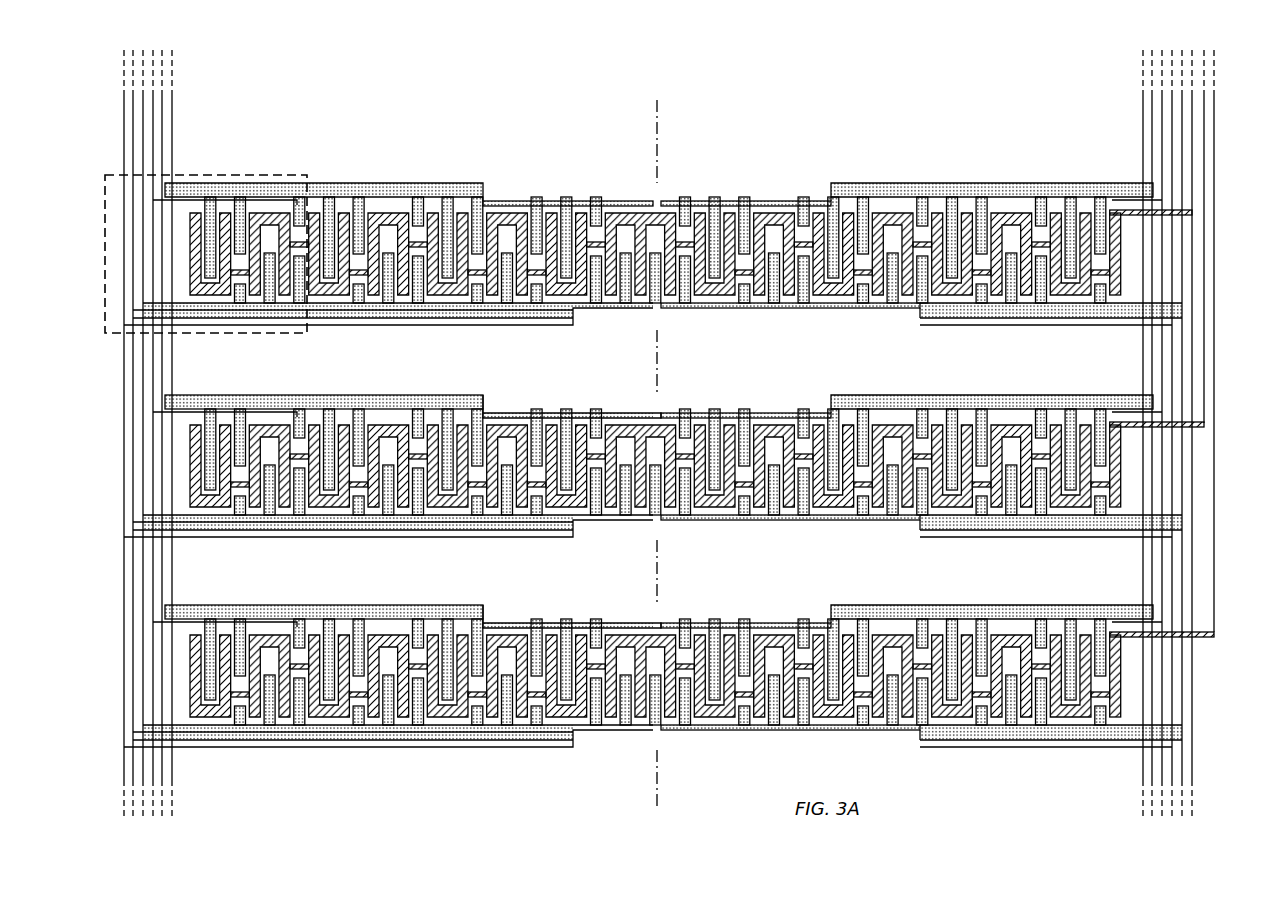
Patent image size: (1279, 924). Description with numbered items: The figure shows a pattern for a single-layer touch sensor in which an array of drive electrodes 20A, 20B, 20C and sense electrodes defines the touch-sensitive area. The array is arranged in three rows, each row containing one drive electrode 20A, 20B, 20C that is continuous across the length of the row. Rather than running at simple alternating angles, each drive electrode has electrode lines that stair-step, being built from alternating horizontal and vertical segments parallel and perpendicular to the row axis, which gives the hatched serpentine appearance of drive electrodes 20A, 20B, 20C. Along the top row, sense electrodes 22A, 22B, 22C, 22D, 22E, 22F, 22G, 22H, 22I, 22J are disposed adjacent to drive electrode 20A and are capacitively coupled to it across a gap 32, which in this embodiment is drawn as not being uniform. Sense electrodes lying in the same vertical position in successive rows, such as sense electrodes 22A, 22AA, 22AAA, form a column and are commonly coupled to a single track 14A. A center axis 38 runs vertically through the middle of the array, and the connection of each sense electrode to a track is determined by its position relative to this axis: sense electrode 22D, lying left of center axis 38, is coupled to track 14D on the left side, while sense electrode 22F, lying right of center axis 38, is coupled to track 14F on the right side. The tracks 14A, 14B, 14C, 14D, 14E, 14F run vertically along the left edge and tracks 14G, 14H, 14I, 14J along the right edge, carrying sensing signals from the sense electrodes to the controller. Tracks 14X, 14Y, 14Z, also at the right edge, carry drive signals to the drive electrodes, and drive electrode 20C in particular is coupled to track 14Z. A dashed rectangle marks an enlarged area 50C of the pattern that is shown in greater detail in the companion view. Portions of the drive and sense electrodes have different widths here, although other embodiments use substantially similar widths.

The track 14A is at (153, 157).
The track 14B is at (143, 122).
The track 14C is at (162, 140).
The track 14D is at (133, 150).
The track 14E is at (172, 128).
The track 14F is at (105, 207).
The track 14G is at (1172, 125).
The track 14H is at (1143, 118).
The track 14I is at (1162, 160).
The track 14J is at (1152, 135).
The track 14X is at (1197, 177).
The track 14Y is at (1204, 360).
The track 14Z is at (1214, 535).
The drive electrode 20A is at (520, 220).
The drive electrode 20B is at (555, 430).
The drive electrode 20C is at (555, 640).
The sense electrode 22A is at (270, 195).
The sense electrode 22B is at (270, 305).
The sense electrode 22C is at (420, 195).
The sense electrode 22D is at (480, 310).
The sense electrode 22E is at (565, 203).
The sense electrode 22F is at (748, 203).
The sense electrode 22G is at (835, 310).
The sense electrode 22H is at (880, 195).
The sense electrode 22I is at (1020, 310).
The sense electrode 22J is at (1040, 200).
The sense electrode 22AA is at (215, 425).
The sense electrode 22AAA is at (218, 640).
The gap 32 is at (660, 306).
The center axis 38 is at (660, 755).
The enlarged area 50C is at (307, 175).